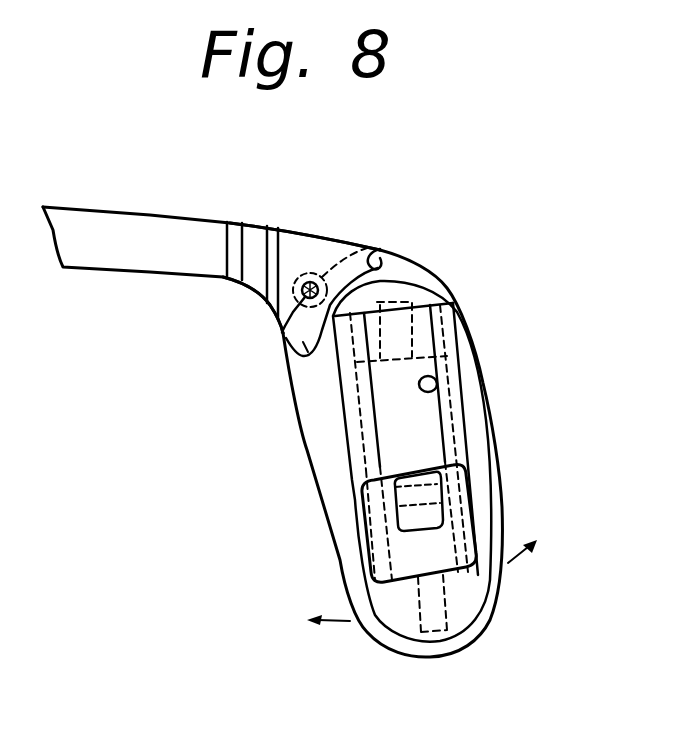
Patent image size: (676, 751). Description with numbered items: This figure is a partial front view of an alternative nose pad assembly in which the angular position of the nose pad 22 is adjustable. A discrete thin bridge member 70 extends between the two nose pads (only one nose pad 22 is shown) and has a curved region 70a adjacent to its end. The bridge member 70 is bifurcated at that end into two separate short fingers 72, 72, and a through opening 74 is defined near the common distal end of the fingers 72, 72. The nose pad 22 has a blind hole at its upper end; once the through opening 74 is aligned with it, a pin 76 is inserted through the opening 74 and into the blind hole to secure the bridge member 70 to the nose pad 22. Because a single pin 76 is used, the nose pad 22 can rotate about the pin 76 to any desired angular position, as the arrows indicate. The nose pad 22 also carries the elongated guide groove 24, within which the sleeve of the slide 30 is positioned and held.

The nose pad 22 is at (333, 475).
The guide groove 24 is at (425, 378).
The slide 30 is at (462, 480).
The bridge member 70 is at (85, 227).
The curved region 70a is at (263, 242).
The finger 72 is at (380, 250).
The through opening 74 is at (310, 283).
The pin 76 is at (278, 336).